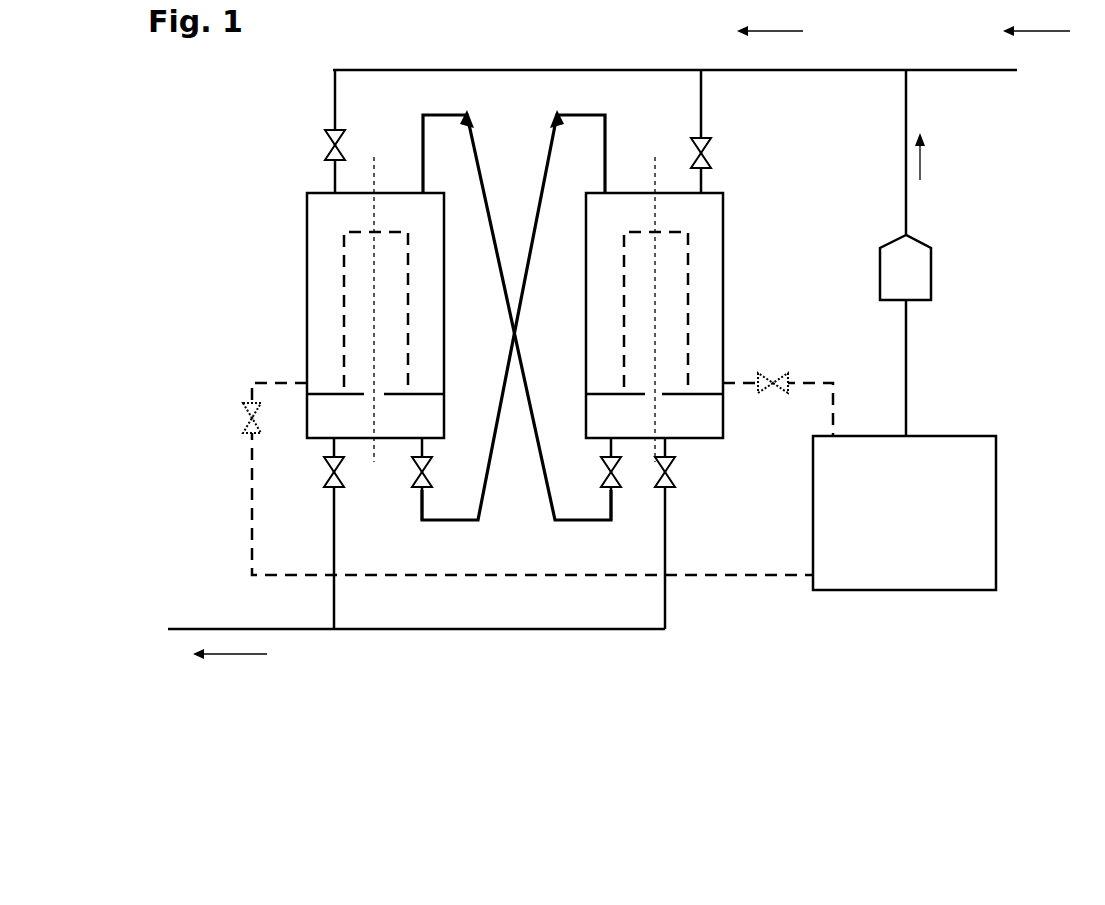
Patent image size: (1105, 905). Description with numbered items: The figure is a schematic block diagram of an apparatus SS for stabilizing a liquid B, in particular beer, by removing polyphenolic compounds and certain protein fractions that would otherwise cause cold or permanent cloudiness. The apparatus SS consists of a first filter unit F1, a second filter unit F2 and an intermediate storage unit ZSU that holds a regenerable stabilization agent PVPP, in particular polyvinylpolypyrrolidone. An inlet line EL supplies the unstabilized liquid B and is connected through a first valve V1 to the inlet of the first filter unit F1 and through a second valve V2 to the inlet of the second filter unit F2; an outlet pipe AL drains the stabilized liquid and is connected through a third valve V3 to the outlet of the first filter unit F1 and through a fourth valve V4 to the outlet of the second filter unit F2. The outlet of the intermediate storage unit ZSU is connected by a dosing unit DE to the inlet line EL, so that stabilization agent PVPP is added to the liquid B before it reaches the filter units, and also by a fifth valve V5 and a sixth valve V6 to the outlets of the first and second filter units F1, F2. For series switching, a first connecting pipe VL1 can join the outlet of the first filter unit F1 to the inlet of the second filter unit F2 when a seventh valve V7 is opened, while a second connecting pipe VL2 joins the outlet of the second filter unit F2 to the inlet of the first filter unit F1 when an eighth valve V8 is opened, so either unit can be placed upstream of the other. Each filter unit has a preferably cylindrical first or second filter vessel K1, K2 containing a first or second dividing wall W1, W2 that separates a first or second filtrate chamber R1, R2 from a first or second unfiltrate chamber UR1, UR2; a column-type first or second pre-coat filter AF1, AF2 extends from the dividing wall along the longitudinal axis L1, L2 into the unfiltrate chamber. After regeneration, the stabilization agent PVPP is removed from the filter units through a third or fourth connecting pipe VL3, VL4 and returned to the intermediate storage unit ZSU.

The inlet line EL is at (962, 66).
The liquid B is at (1036, 19).
The first valve V1 is at (325, 135).
The second valve V2 is at (706, 146).
The third valve V3 is at (326, 485).
The fourth valve V4 is at (670, 486).
The fifth valve V5 is at (245, 425).
The sixth valve V6 is at (766, 396).
The seventh valve V7 is at (417, 487).
The eighth valve V8 is at (616, 487).
The first filter vessel K1 is at (304, 267).
The second filter vessel K2 is at (724, 290).
The first filter unit F1 is at (268, 244).
The second filter unit F2 is at (752, 220).
The first unfiltrate chamber UR1 is at (333, 215).
The second unfiltrate chamber UR2 is at (614, 215).
The longitudinal axis L1 is at (373, 297).
The longitudinal axis L2 is at (653, 297).
The first pre-coat filter AF1 is at (342, 312).
The second pre-coat filter AF2 is at (683, 345).
The first dividing wall W1 is at (472, 377).
The second dividing wall W2 is at (594, 392).
The first filtrate chamber R1 is at (405, 423).
The second filtrate chamber R2 is at (685, 423).
The first connecting pipe VL1 is at (583, 110).
The second connecting pipe VL2 is at (435, 110).
The third connecting pipe VL3 is at (250, 513).
The fourth connecting pipe VL4 is at (816, 383).
The outlet pipe AL is at (183, 628).
The intermediate storage unit ZSU is at (999, 476).
The dosing unit DE is at (931, 276).
The stabilization agent PVPP is at (952, 156).
The apparatus for stabilizing a liquid SS is at (874, 674).